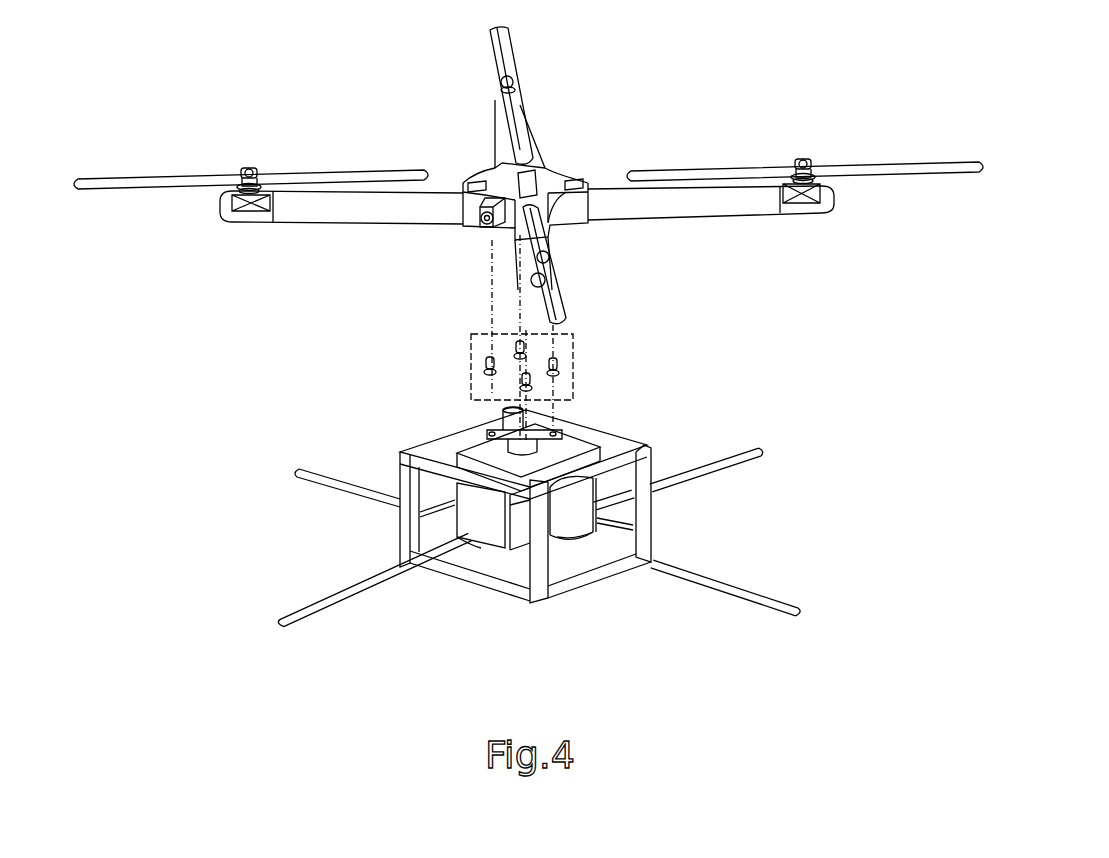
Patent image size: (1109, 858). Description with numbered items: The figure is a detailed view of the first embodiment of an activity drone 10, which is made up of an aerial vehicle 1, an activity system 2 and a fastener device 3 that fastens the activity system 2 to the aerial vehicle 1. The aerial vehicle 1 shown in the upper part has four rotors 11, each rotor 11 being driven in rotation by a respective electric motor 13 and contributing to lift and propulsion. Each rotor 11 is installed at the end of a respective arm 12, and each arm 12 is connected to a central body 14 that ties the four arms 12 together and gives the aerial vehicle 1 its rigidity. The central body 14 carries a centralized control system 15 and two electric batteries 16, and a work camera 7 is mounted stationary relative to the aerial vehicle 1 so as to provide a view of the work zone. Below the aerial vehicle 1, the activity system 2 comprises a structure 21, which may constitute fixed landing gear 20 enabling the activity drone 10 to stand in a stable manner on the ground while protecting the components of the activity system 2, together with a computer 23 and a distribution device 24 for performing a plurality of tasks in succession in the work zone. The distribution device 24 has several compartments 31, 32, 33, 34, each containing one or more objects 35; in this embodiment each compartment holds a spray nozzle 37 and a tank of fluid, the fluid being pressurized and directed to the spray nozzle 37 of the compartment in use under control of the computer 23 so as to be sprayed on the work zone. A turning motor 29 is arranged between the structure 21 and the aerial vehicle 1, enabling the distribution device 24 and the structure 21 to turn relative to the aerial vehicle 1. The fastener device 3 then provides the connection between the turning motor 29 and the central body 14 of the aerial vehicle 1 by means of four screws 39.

The aerial vehicle 1 is at (361, 104).
The activity system 2 is at (388, 606).
The fastener device 3 is at (472, 358).
The work camera 7 is at (480, 220).
The activity drone 10 is at (163, 676).
The rotor 11 is at (158, 180).
The arm 12 is at (318, 222).
The electric motor 13 is at (255, 222).
The central body 14 is at (548, 185).
The centralized control system 15 is at (530, 172).
The electric battery 16 is at (475, 182).
The fixed landing gear 20 is at (443, 550).
The structure 21 is at (397, 516).
The computer 23 is at (640, 462).
The distribution device 24 is at (595, 517).
The turning motor 29 is at (560, 428).
The compartment 31 is at (410, 480).
The compartment 32 is at (481, 552).
The compartment 33 is at (557, 537).
The compartment 34 is at (600, 497).
The object 35 is at (521, 537).
The spray nozzle 37 is at (333, 492).
The screw 39 is at (512, 340).